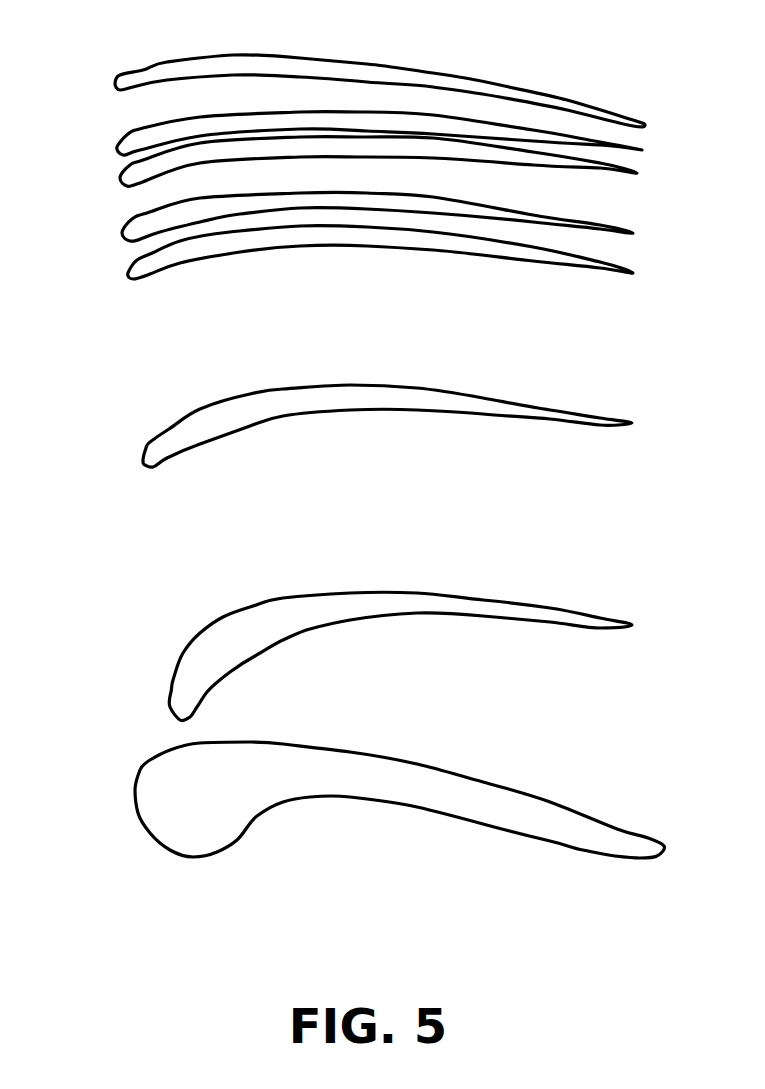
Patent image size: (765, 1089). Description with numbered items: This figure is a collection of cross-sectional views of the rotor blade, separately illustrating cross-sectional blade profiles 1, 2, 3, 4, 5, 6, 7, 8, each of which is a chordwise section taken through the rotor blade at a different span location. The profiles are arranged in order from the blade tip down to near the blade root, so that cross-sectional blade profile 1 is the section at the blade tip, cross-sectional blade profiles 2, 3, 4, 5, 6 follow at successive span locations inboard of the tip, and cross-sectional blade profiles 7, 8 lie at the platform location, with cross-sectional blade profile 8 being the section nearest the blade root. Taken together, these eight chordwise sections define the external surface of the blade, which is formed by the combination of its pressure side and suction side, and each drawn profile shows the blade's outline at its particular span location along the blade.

The cross-sectional blade profile 1 is at (148, 77).
The cross-sectional blade profile 2 is at (140, 137).
The cross-sectional blade profile 3 is at (128, 175).
The cross-sectional blade profile 4 is at (137, 228).
The cross-sectional blade profile 5 is at (145, 267).
The cross-sectional blade profile 6 is at (167, 448).
The cross-sectional blade profile 7 is at (193, 672).
The cross-sectional blade profile 8 is at (158, 790).